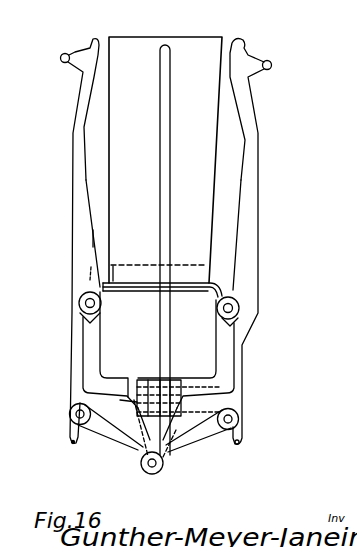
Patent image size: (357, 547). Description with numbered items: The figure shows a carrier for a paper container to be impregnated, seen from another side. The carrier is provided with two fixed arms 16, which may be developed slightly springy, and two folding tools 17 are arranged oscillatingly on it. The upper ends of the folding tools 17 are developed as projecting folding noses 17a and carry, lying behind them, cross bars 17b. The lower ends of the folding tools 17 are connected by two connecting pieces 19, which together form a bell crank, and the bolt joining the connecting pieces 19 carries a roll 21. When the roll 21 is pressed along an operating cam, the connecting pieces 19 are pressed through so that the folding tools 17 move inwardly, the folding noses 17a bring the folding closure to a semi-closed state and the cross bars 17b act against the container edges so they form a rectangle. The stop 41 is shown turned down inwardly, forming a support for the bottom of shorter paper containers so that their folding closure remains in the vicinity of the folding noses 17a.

The fixed arm 16 is at (165, 195).
The folding tool 17 is at (78, 202).
The folding nose 17a is at (98, 56).
The cross bar 17b is at (61, 55).
The connecting piece 19 is at (128, 448).
The roll 21 is at (152, 475).
The stop 41 is at (123, 288).